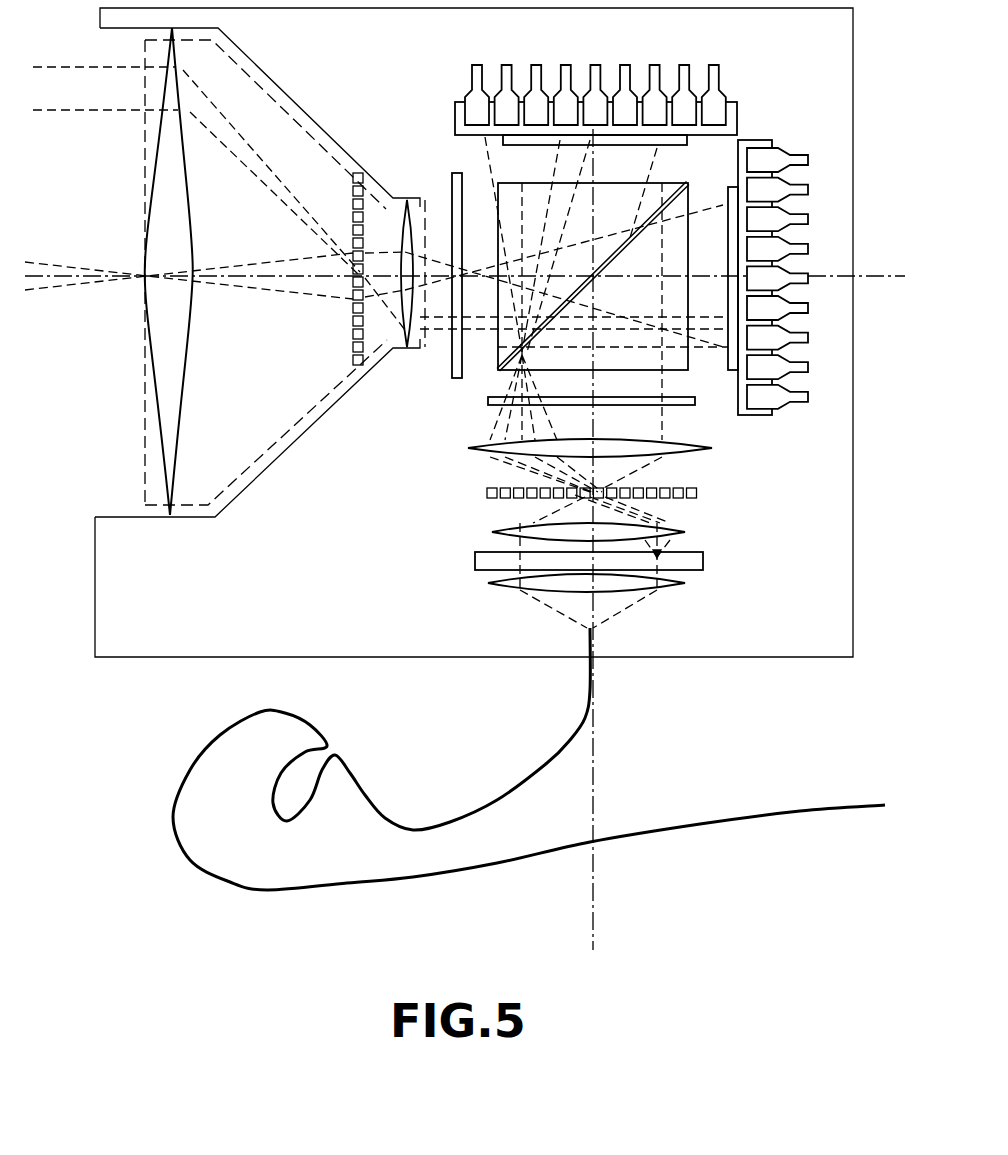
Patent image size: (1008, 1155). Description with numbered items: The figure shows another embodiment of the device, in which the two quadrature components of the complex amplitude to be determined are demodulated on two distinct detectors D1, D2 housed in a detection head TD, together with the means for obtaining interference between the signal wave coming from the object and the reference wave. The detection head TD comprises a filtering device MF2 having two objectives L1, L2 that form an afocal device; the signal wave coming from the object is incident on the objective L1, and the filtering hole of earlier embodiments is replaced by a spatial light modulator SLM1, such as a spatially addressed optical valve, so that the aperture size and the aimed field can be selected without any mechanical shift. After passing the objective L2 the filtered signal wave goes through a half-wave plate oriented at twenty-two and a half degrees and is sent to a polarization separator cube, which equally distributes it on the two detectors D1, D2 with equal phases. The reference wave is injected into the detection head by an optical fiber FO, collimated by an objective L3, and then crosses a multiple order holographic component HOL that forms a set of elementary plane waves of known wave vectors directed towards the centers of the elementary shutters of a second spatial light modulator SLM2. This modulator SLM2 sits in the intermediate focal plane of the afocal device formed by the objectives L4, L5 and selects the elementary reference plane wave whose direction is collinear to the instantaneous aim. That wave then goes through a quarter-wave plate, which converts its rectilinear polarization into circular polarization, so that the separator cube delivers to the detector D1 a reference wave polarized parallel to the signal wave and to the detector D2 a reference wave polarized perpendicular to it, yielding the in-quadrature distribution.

The detection head TD is at (165, 658).
The filtering device MF2 is at (143, 462).
The objective L1 is at (152, 445).
The spatial light modulator SLM1 is at (353, 310).
The objective L2 is at (412, 348).
The detector D1 is at (622, 58).
The detector D2 is at (812, 185).
The objective of afocal device L5 is at (486, 450).
The second spatial light modulator SLM2 is at (487, 496).
The objective of afocal device L4 is at (685, 532).
The multiple order holographic component HOL is at (690, 562).
The objective L3 is at (683, 590).
The optical fiber FO is at (813, 810).